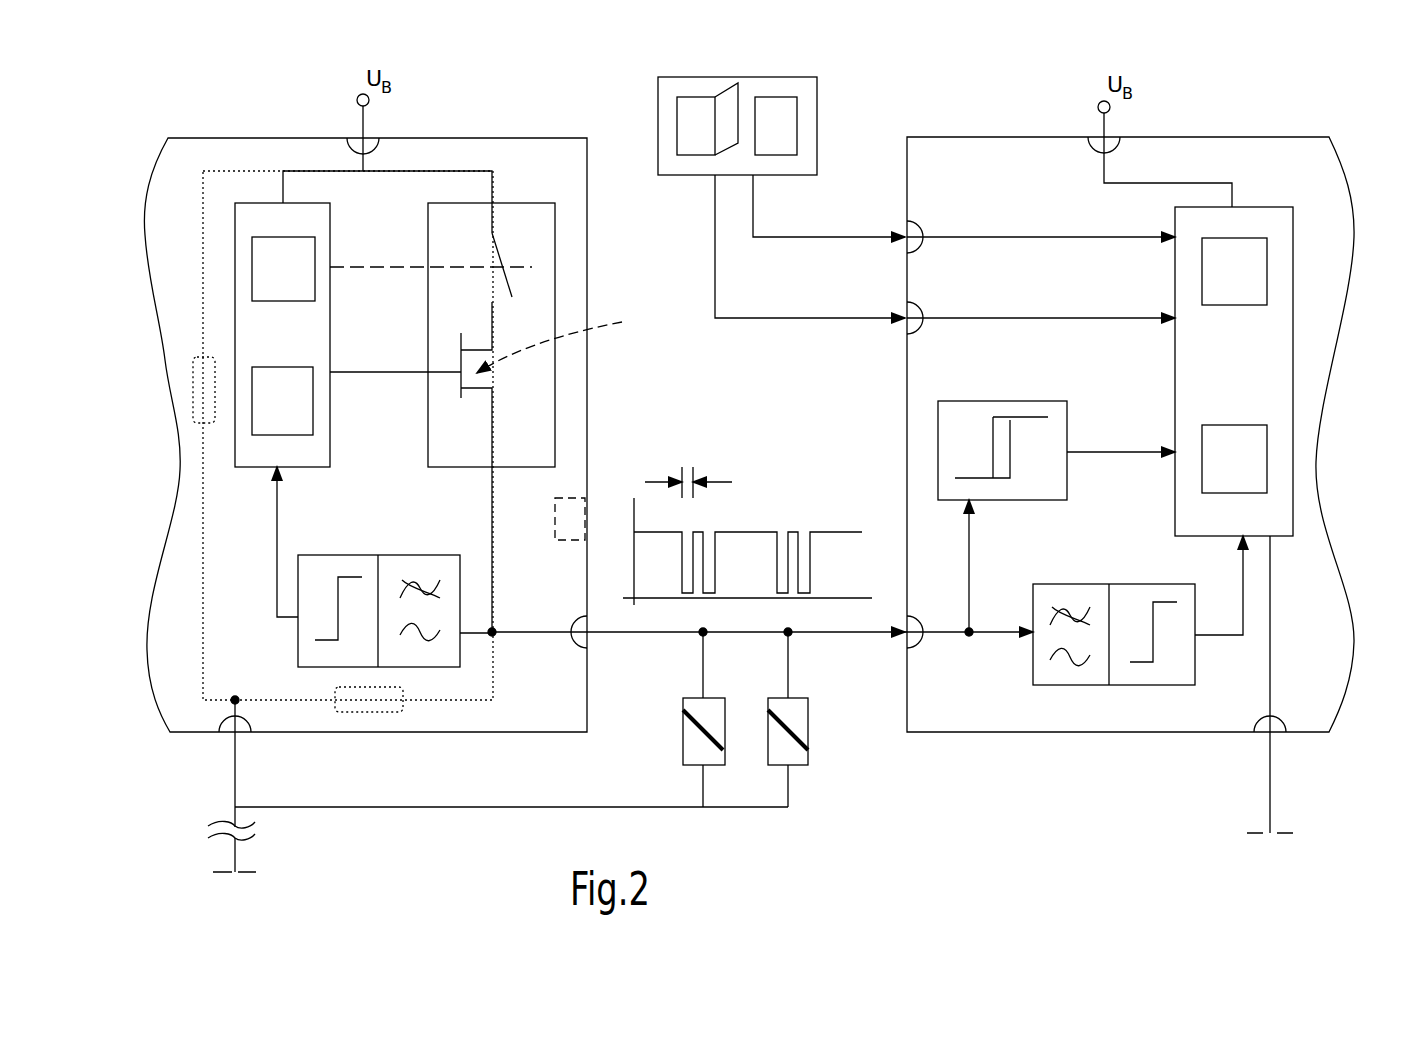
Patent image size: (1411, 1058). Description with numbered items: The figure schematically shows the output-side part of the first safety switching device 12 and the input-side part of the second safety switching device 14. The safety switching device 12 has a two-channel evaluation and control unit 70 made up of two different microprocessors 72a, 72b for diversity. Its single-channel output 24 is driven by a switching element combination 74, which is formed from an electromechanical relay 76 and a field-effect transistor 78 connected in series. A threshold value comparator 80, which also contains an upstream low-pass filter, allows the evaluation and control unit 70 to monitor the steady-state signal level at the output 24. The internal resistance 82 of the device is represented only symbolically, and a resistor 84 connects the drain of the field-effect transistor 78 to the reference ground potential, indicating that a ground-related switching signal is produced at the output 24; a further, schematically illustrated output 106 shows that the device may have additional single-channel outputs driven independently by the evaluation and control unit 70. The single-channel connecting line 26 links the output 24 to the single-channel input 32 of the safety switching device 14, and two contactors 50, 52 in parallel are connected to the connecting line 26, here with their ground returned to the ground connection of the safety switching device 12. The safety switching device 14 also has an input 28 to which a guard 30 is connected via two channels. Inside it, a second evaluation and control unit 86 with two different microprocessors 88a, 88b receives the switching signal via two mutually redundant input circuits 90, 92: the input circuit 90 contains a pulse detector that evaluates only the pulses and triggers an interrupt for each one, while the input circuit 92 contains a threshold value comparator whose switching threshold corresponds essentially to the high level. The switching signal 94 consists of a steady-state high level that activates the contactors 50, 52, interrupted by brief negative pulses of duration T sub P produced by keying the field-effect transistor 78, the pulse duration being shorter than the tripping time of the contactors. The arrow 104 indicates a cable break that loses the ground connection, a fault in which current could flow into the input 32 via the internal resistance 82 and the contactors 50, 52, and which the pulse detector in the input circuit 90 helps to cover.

The safety switching device 12 is at (198, 138).
The safety switching device 14 is at (1258, 137).
The single-channel output 24 is at (573, 647).
The single-channel connecting line 26 is at (848, 634).
The input 28 is at (905, 275).
The guard 30 is at (793, 77).
The input 32 is at (920, 641).
The contactor 50 is at (718, 767).
The contactor 52 is at (800, 767).
The evaluation and control unit 70 is at (255, 203).
The microprocessor 72a is at (262, 284).
The microprocessor 72b is at (306, 415).
The switching element combination 74 is at (508, 203).
The relay 76 is at (500, 263).
The field-effect transistor 78 is at (563, 337).
The threshold value comparator 80 is at (352, 555).
The internal resistance 82 is at (193, 390).
The resistor 84 is at (365, 712).
The evaluation and control unit 86 is at (1294, 307).
The microprocessor 88a is at (1212, 287).
The microprocessor 88b is at (1212, 474).
The input circuit 90 is at (985, 401).
The input circuit 92 is at (1140, 687).
The switching signal 94 is at (760, 532).
The arrow 104 is at (200, 823).
The output 106 is at (577, 525).